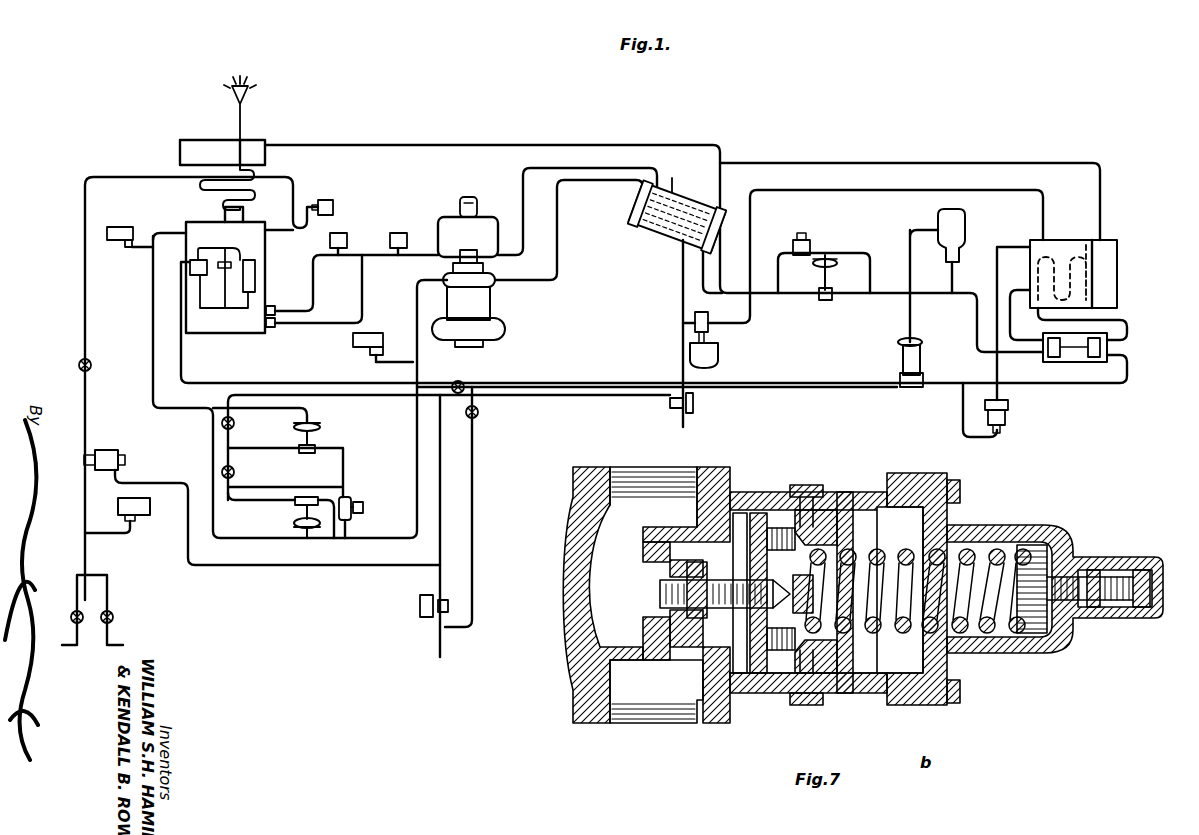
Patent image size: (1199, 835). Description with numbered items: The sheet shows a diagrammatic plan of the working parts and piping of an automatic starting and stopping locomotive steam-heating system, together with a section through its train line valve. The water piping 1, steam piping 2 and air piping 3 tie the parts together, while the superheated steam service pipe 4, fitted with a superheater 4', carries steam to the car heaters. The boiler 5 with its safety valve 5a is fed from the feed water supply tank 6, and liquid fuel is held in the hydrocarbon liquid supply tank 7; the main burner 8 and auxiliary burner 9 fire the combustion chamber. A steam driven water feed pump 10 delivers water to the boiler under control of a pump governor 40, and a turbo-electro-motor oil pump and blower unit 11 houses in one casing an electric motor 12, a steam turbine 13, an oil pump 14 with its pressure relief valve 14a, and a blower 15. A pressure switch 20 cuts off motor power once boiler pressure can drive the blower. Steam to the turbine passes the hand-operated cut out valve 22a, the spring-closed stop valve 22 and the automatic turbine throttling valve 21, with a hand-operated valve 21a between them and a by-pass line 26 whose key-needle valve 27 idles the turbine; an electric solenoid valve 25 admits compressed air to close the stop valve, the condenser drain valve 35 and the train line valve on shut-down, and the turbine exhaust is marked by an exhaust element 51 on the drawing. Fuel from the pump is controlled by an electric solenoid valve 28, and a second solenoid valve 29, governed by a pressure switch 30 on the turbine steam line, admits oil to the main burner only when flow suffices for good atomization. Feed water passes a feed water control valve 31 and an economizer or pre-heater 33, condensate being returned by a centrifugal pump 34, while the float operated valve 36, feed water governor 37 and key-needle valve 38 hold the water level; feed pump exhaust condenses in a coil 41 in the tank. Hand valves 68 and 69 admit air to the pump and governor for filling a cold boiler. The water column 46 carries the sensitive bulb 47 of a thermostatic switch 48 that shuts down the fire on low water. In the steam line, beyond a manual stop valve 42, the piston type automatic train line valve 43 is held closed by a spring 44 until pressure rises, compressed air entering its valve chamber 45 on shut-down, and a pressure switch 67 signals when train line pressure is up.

In FIG. 1, the water piping 1 is at (398, 140).
In FIG. 1, the steam piping 2 is at (184, 410).
In FIG. 1, the air piping 3 is at (248, 568).
In FIG. 1, the superheated steam service pipe 4 is at (186, 388).
In FIG. 1, the superheater 4' is at (238, 187).
In FIG. 1, the boiler 5 is at (188, 222).
In FIG. 1, the safety valve 5a is at (242, 84).
In FIG. 1, the feed water supply tank 6 is at (1030, 272).
In FIG. 1, the hydrocarbon liquid supply tank 7 is at (1117, 270).
In FIG. 1, the main burner 8 is at (272, 305).
In FIG. 1, the auxiliary burner 9 is at (276, 327).
In FIG. 1, the steam driven water feed pump 10 is at (1075, 362).
In FIG. 1, the turbo-electro-motor oil pump and blower unit 11 is at (491, 301).
In FIG. 1, the electric motor 12 is at (455, 302).
In FIG. 1, the steam turbine 13 is at (496, 279).
In FIG. 1, the oil pump 14 is at (469, 252).
In FIG. 1, the pressure relief valve 14a is at (470, 200).
In FIG. 1, the blower 15 is at (505, 331).
In FIG. 1, the pressure switch 20 is at (118, 227).
In FIG. 1, the automatic turbine throttling valve 21 is at (295, 520).
In FIG. 1, the hand-operated valve 21a is at (236, 472).
In FIG. 1, the stop valve 22 is at (321, 429).
In FIG. 1, the hand-operated cut out valve 22a is at (236, 423).
In FIG. 1, the electric solenoid valve 25 is at (420, 612).
In FIG. 1, the by-pass line 26 is at (350, 497).
In FIG. 1, the key-needle valve 27 is at (362, 505).
In FIG. 1, the electric solenoid valve 28 is at (400, 233).
In FIG. 1, the solenoid valve 29 is at (342, 233).
In FIG. 1, the pressure switch 30 is at (383, 334).
In FIG. 1, the feed water control valve 31 is at (830, 300).
In FIG. 1, the economizer or pre-heater 33 is at (193, 140).
In FIG. 1, the centrifugal pump 34 is at (718, 355).
In FIG. 1, the condenser drain valve 35 is at (675, 410).
In FIG. 1, the float operated valve 36 is at (190, 267).
In FIG. 1, the feed water governor 37 is at (836, 264).
In FIG. 1, the key-needle valve 38 is at (808, 244).
In FIG. 1, the pump governor 40 is at (911, 388).
In FIG. 1, the coil 41 is at (1095, 288).
In FIG. 1, the manual stop valve 42 is at (78, 366).
In FIG. 1, the automatic train line valve 43 is at (110, 450).
In FIG. 7B, the automatic train line valve 43 is at (813, 693).
In FIG. 7B, the spring 44 is at (1000, 548).
In FIG. 7B, the valve chamber 45 is at (910, 658).
In FIG. 1, the water column 46 is at (256, 272).
In FIG. 1, the sensitive bulb 47 is at (226, 258).
In FIG. 1, the thermostatic switch 48 is at (328, 200).
In FIG. 1, the exhaust muffler 51 is at (677, 215).
In FIG. 1, the pressure switch 67 is at (146, 516).
In FIG. 1, the hand valve 68 is at (461, 382).
In FIG. 1, the hand valve 69 is at (478, 413).